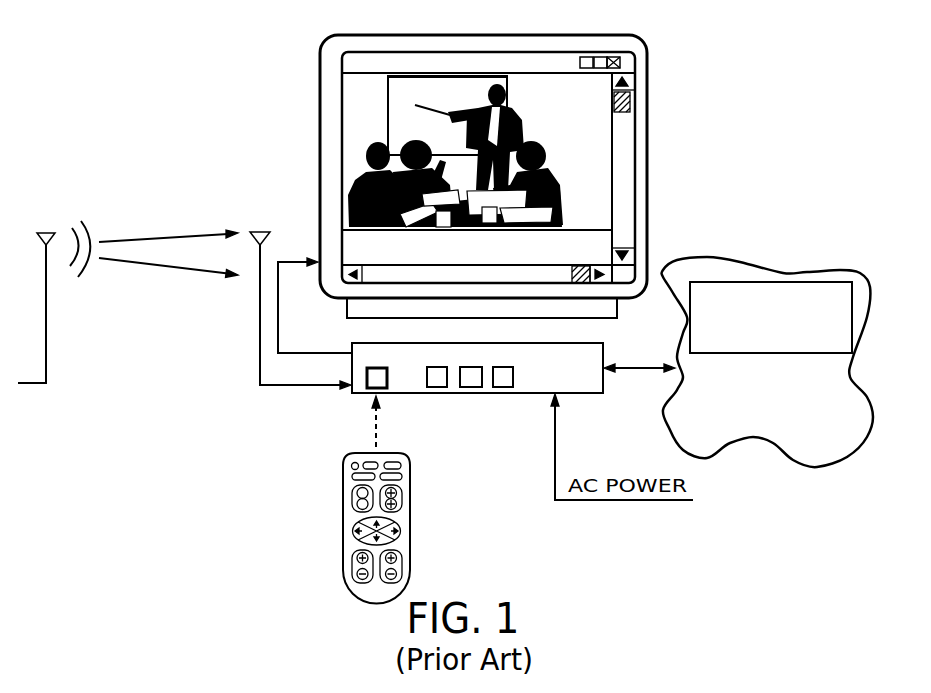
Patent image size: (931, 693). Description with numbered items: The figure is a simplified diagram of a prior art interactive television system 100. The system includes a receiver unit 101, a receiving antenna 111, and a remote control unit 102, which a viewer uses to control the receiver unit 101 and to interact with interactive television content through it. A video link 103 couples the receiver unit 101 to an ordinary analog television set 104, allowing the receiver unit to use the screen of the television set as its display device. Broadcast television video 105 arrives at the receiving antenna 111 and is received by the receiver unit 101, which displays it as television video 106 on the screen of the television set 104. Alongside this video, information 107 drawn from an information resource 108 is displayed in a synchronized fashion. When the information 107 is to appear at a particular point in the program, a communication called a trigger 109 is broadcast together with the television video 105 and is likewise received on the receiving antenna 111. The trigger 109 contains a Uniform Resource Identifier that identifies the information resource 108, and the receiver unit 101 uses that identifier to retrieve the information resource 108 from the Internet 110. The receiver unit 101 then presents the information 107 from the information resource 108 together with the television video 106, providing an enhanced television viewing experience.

The interactive television system 100 is at (704, 86).
The receiver unit 101 is at (596, 386).
The remote control unit 102 is at (410, 517).
The video link 103 is at (279, 331).
The analog television set 104 is at (488, 176).
The broadcast television video 105 is at (172, 234).
The television video 106 is at (358, 138).
The information 107 is at (600, 238).
The information resource 108 is at (786, 277).
The trigger 109 is at (159, 265).
The Internet 110 is at (788, 434).
The receiving antenna 111 is at (262, 248).